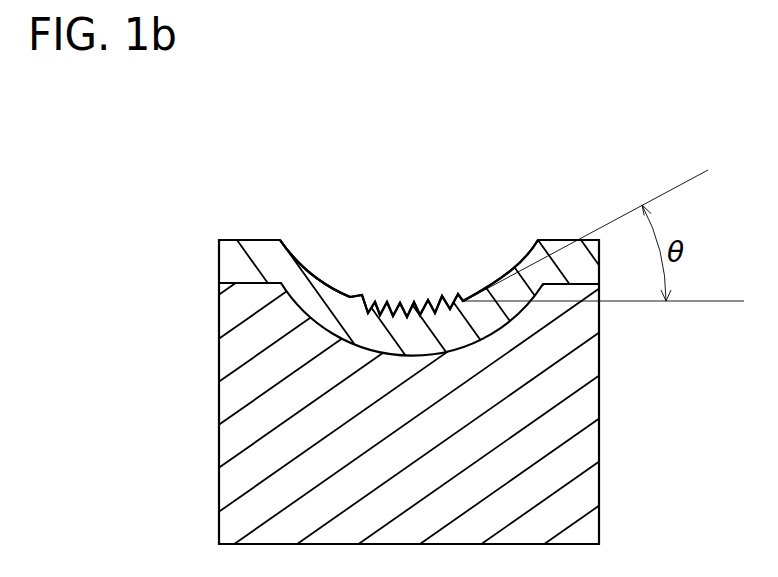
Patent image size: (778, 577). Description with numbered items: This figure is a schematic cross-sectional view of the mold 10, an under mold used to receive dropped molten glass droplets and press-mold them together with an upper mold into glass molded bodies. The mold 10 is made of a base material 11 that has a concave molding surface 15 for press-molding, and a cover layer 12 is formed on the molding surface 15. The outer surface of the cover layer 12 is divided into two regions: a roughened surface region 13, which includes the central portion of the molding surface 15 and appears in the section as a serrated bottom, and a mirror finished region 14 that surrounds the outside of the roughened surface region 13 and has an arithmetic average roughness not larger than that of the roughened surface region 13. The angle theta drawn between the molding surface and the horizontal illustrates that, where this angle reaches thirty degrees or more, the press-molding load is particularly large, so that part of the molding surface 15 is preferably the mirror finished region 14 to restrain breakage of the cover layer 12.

The mold 10 is at (265, 163).
The base material 11 is at (227, 407).
The cover layer 12 is at (227, 262).
The roughened surface region 13 is at (380, 297).
The mirror finished region 14 is at (316, 276).
The molding surface 15 is at (402, 215).